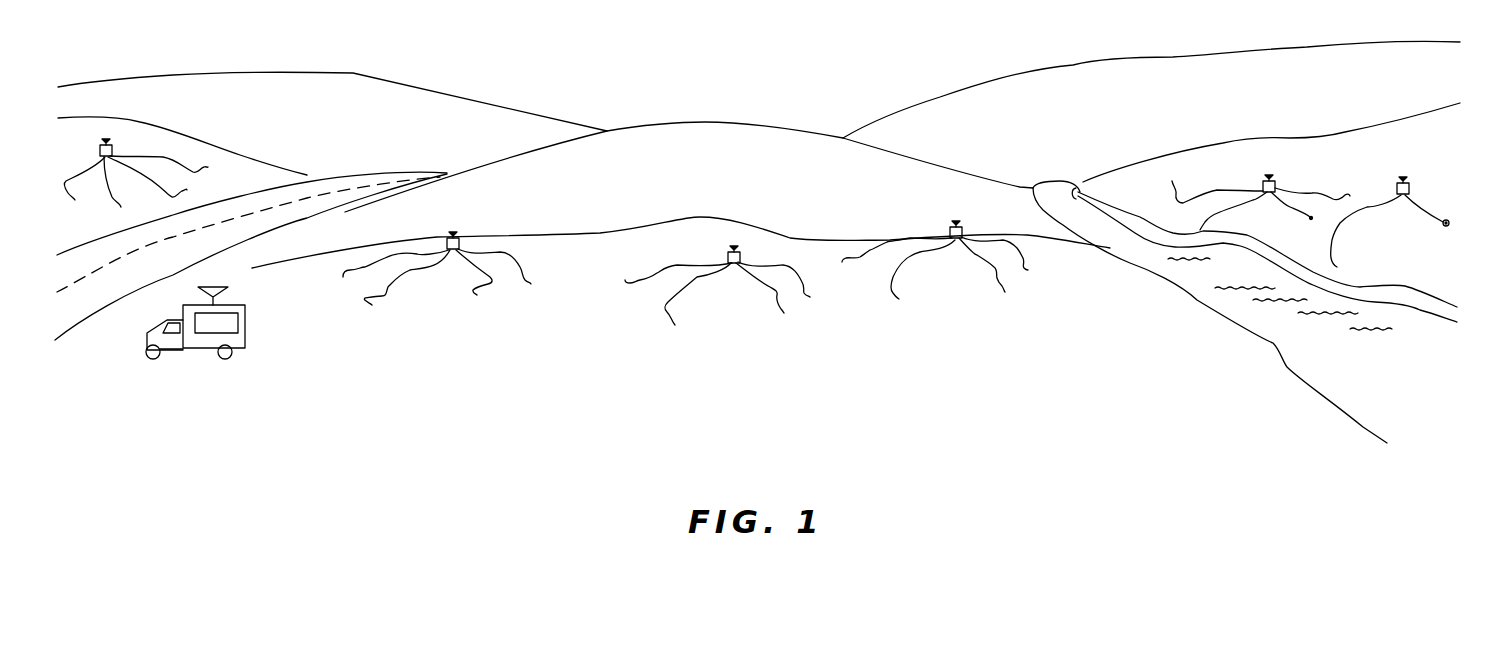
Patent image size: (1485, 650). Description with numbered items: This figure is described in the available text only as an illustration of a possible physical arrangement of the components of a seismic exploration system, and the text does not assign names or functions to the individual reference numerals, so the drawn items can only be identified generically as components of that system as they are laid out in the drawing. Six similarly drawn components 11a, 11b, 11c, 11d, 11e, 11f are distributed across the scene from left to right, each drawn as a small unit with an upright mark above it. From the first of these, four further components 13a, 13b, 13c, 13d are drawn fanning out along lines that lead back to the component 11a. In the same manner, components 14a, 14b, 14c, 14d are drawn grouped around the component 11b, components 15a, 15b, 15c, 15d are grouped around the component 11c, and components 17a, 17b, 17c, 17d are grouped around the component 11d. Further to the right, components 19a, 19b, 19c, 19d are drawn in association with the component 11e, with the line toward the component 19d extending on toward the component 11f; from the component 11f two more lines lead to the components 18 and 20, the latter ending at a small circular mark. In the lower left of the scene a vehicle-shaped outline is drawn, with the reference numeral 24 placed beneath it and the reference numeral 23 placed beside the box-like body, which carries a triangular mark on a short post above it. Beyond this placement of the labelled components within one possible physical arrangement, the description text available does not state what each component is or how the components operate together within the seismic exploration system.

The data collection station 11a is at (112, 148).
The data collection station 11b is at (457, 236).
The data collection station 11c is at (740, 255).
The data collection station 11d is at (983, 210).
The data collection station 11e is at (1275, 178).
The data collection station 11f is at (1409, 182).
The sensor 13a is at (85, 185).
The sensor 13b is at (128, 188).
The sensor 13c is at (163, 178).
The sensor 13d is at (176, 166).
The sensor 14a is at (390, 273).
The sensor 14b is at (401, 288).
The sensor 14c is at (475, 283).
The sensor 14d is at (511, 271).
The sensor 15a is at (670, 285).
The sensor 15b is at (698, 300).
The sensor 15c is at (777, 296).
The sensor 15d is at (790, 285).
The sensor 17a is at (892, 259).
The sensor 17b is at (923, 275).
The sensor 17c is at (999, 272).
The sensor 17d is at (1012, 259).
The sensor 18 is at (1366, 237).
The sensor 19a is at (1207, 184).
The sensor 19b is at (1205, 228).
The sensor 19c is at (1310, 218).
The sensor 19d is at (1330, 194).
The sensor 20 is at (1443, 223).
The receiver unit 23 is at (238, 323).
The vehicle 24 is at (211, 332).